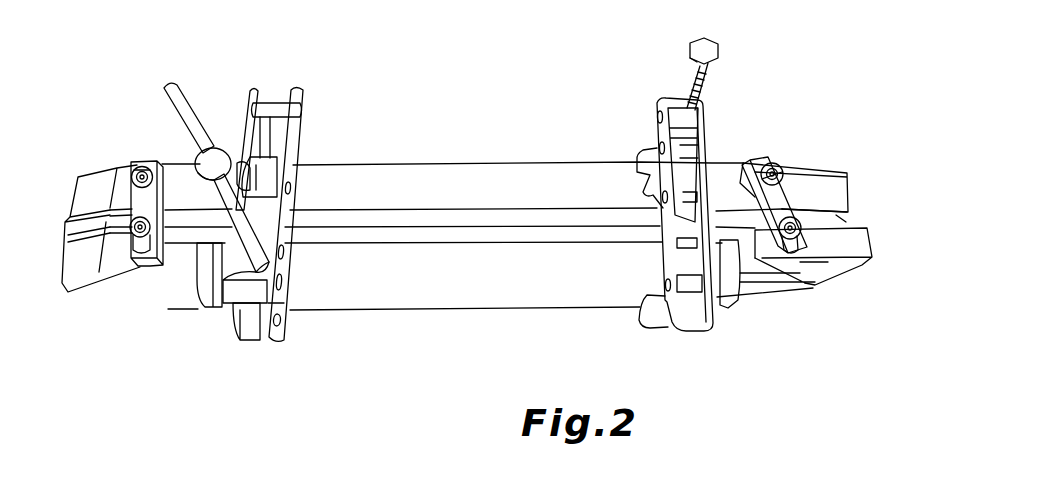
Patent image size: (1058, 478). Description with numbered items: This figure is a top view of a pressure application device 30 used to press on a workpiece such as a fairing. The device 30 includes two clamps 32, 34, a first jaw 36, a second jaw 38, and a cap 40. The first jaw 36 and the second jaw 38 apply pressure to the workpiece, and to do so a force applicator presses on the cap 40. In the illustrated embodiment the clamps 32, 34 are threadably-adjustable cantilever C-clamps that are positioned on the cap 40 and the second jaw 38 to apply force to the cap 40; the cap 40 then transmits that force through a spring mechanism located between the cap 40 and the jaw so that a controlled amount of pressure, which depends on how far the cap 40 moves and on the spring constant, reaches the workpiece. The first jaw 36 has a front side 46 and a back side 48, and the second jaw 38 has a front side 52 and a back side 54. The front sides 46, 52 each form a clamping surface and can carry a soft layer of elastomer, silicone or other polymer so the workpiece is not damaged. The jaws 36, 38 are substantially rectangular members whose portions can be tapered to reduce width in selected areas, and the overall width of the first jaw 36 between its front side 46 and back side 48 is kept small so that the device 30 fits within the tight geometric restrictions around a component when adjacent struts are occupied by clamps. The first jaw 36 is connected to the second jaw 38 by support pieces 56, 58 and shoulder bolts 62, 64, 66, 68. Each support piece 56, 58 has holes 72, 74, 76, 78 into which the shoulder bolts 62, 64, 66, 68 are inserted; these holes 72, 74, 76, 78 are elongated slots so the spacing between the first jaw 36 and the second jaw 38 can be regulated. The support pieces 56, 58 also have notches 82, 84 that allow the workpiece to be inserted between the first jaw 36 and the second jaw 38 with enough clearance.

The pressure application device 30 is at (800, 79).
The clamp 32 is at (240, 328).
The clamp 34 is at (694, 206).
The first jaw 36 is at (837, 235).
The second jaw 38 is at (433, 163).
The cap 40 is at (432, 282).
The front side 46 is at (862, 225).
The back side 48 is at (780, 284).
The front side 52 is at (838, 214).
The back side 54 is at (718, 160).
The support piece 56 is at (122, 209).
The support piece 58 is at (778, 193).
The shoulder bolt 62 is at (143, 168).
The shoulder bolt 64 is at (131, 228).
The shoulder bolt 66 is at (777, 166).
The shoulder bolt 68 is at (803, 236).
The hole 72 is at (152, 170).
The hole 74 is at (144, 250).
The hole 76 is at (766, 166).
The hole 78 is at (795, 240).
The notch 82 is at (158, 213).
The notch 84 is at (778, 195).